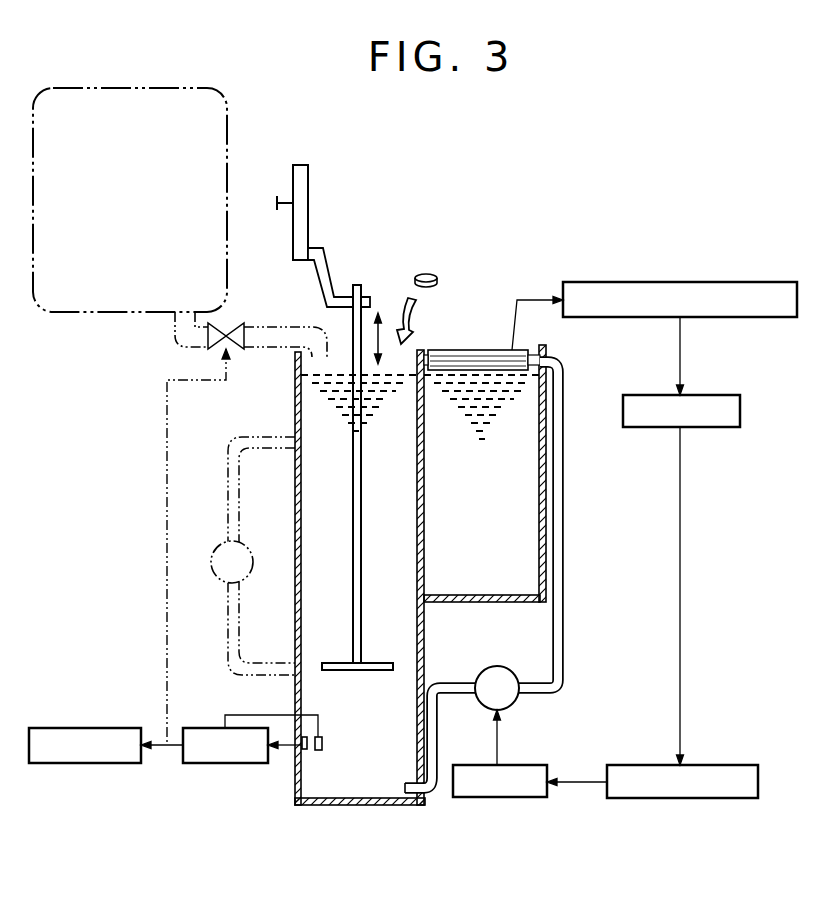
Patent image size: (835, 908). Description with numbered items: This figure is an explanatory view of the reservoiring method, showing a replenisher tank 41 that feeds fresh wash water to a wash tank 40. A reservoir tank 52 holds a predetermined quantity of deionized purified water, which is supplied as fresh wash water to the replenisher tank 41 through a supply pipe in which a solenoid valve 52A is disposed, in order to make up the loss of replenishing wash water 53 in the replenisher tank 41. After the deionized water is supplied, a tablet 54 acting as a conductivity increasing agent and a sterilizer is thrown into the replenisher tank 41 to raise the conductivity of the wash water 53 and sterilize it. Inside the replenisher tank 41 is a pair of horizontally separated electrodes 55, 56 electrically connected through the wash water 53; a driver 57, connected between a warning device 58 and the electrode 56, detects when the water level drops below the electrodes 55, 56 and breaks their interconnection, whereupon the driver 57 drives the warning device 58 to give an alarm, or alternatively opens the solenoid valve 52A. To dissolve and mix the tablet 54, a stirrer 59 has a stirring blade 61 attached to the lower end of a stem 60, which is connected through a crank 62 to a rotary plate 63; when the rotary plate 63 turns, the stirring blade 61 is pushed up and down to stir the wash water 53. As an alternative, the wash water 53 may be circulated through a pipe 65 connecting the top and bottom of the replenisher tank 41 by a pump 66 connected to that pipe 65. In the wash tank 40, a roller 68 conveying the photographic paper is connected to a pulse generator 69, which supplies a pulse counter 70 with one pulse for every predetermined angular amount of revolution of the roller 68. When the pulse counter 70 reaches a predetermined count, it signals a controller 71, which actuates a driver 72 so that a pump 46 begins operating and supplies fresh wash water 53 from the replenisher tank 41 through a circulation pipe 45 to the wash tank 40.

The wash tank 40 is at (525, 528).
The replenisher tank 41 is at (381, 798).
The circulation pipe 45 is at (566, 623).
The pump 46 is at (497, 666).
The reservoir tank 52 is at (228, 130).
The solenoid valve 52A is at (214, 344).
The wash water 53 is at (300, 407).
The tablet 54 is at (424, 272).
The electrode 55 is at (323, 743).
The electrode 56 is at (305, 750).
The driver 57 is at (225, 763).
The warning device 58 is at (84, 728).
The stirrer 59 is at (299, 311).
The stem 60 is at (362, 543).
The stirring blade 61 is at (383, 660).
The crank 62 is at (331, 270).
The rotary plate 63 is at (310, 180).
The pipe 65 is at (227, 500).
The pump 66 is at (211, 562).
The roller 68 is at (482, 350).
The pulse generator 69 is at (680, 282).
The pulse counter 70 is at (700, 427).
The controller 71 is at (683, 798).
The driver 72 is at (497, 797).